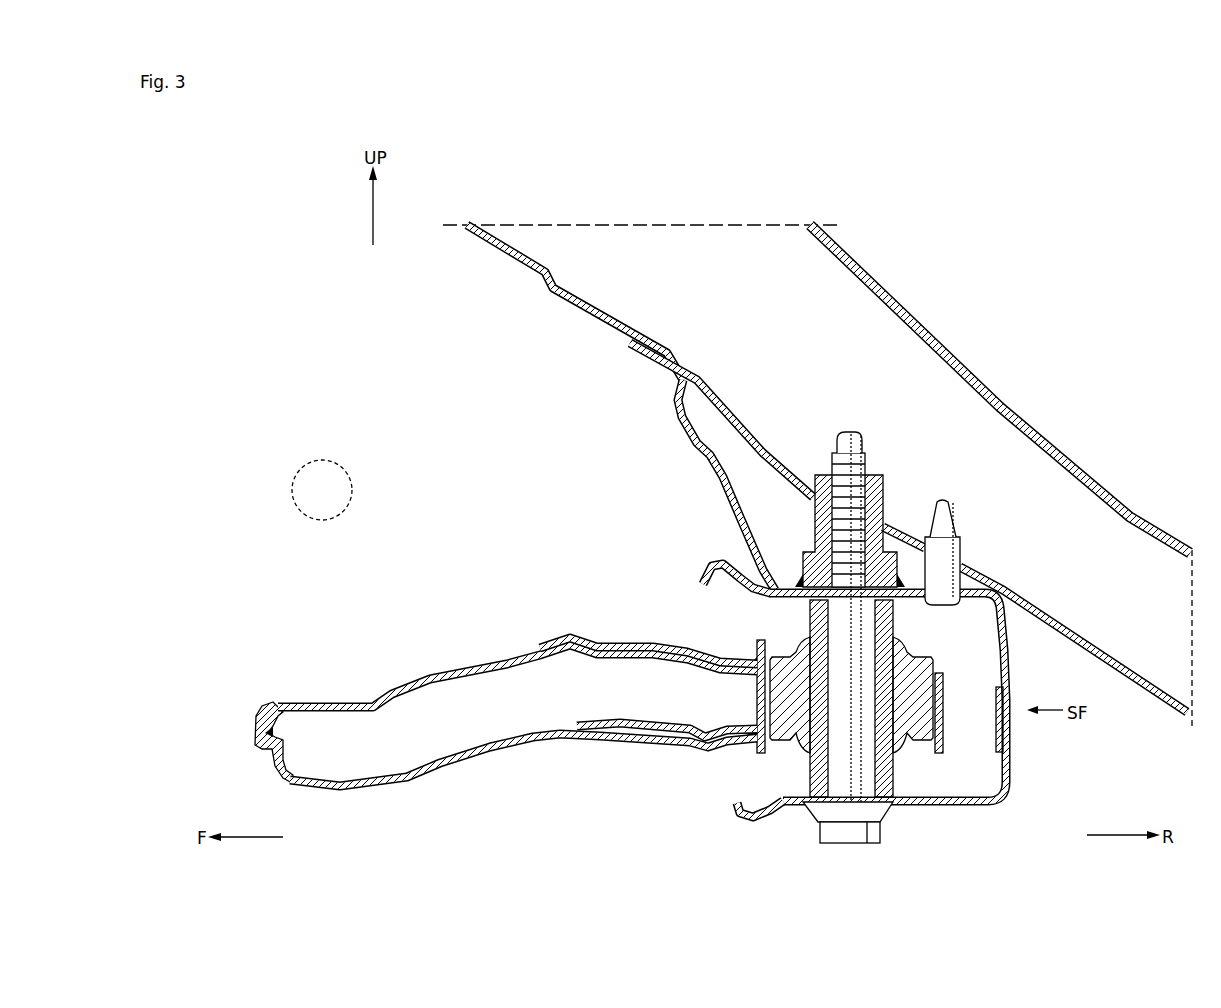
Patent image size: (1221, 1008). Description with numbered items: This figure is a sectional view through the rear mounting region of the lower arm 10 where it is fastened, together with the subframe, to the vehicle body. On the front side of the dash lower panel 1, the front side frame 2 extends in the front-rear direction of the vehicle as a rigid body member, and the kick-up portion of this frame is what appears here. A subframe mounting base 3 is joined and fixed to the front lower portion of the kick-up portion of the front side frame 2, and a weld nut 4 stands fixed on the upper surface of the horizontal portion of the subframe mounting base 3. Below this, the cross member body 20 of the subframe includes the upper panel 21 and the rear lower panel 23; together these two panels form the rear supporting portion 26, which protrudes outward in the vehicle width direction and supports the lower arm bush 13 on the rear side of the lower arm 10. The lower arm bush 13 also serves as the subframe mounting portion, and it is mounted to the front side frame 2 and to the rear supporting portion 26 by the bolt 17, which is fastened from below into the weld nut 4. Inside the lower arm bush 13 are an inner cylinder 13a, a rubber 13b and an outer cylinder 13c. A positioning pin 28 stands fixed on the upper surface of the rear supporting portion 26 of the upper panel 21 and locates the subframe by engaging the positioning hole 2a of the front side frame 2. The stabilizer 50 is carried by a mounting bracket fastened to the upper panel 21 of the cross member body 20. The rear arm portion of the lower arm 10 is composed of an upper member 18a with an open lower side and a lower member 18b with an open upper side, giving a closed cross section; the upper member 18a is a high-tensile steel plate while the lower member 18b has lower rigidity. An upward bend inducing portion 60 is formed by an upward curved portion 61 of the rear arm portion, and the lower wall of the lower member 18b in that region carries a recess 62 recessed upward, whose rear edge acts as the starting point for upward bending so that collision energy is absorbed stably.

The dash lower panel 1 is at (891, 299).
The front side frame 2 is at (688, 376).
The positioning hole 2a is at (968, 565).
The subframe mounting base 3 is at (722, 498).
The weld nut 4 is at (884, 506).
The lower arm 10 is at (510, 699).
The lower arm bush 13 is at (940, 698).
The inner cylinder 13a is at (886, 620).
The rubber 13b is at (907, 742).
The outer cylinder 13c is at (936, 668).
The bolt 17 is at (866, 462).
The upper member 18a is at (430, 678).
The lower member 18b is at (455, 770).
The cross member body 20 is at (882, 709).
The upper panel 21 is at (1012, 655).
The rear lower panel 23 is at (1011, 777).
The rear supporting portion 26 is at (795, 805).
The positioning pin 28 is at (961, 548).
The stabilizer 50 is at (337, 464).
The upward bend inducing portion 60 is at (648, 692).
The upward curved portion 61 is at (594, 641).
The recess 62 is at (613, 733).